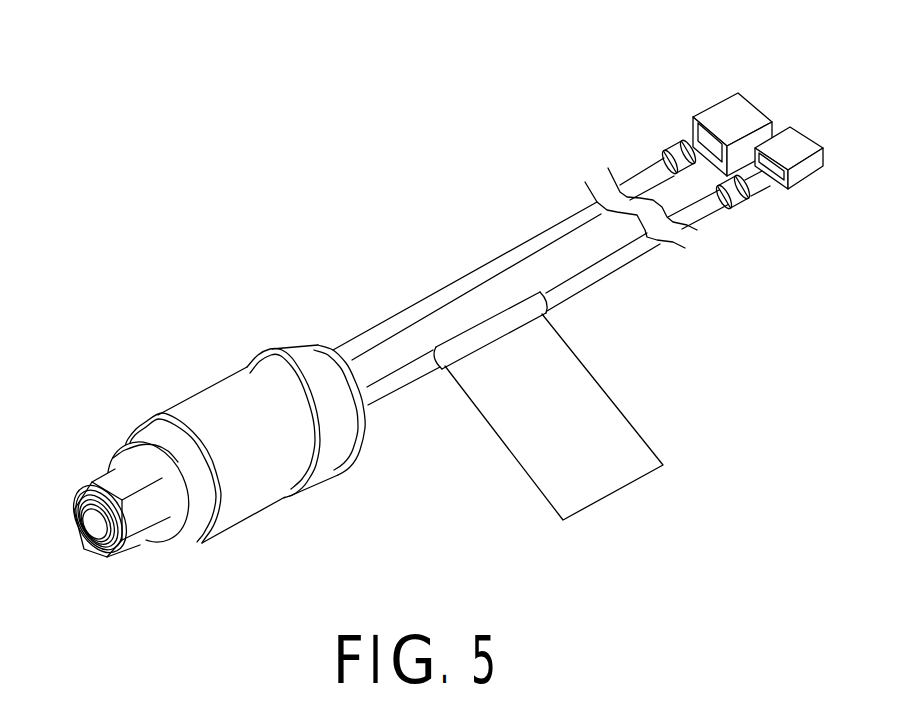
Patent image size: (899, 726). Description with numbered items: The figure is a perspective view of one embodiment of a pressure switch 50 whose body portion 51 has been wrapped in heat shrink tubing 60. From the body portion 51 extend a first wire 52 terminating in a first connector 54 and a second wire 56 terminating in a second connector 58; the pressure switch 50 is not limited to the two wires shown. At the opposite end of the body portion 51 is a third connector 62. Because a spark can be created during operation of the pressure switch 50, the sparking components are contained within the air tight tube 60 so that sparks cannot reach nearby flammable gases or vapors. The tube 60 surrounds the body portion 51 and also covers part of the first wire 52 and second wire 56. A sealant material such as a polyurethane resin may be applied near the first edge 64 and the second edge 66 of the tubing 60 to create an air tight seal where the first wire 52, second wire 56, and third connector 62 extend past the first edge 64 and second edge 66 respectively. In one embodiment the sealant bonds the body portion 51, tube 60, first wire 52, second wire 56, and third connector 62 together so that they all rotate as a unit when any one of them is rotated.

The pressure switch 50 is at (328, 225).
The body portion 51 is at (244, 356).
The first wire 52 is at (500, 262).
The first connector 54 is at (727, 107).
The second wire 56 is at (586, 277).
The second connector 58 is at (794, 131).
The heat shrink tubing 60 is at (213, 402).
The third connector 62 is at (116, 480).
The first edge 64 is at (118, 449).
The second edge 66 is at (325, 345).